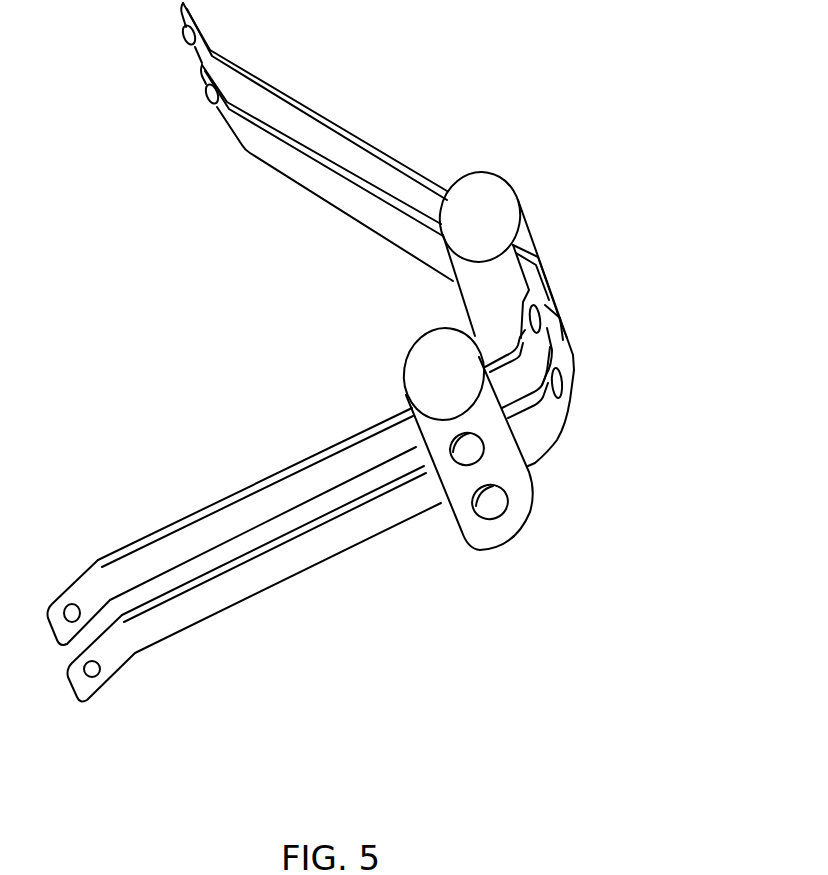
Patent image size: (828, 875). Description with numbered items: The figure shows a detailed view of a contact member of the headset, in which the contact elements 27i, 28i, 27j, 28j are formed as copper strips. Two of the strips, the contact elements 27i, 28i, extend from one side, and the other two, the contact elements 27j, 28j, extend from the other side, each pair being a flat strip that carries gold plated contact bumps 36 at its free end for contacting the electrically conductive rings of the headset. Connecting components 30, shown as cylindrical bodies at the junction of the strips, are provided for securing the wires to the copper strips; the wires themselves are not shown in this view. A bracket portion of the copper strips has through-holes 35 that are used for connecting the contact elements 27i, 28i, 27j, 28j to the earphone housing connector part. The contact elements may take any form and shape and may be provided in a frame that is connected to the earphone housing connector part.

The contact element 27i is at (385, 177).
The contact element 28i is at (257, 143).
The contact element 27j is at (220, 523).
The contact element 28j is at (295, 558).
The connecting component 30 is at (492, 203).
The through-hole 35 is at (569, 381).
The contact bump 36 is at (185, 37).